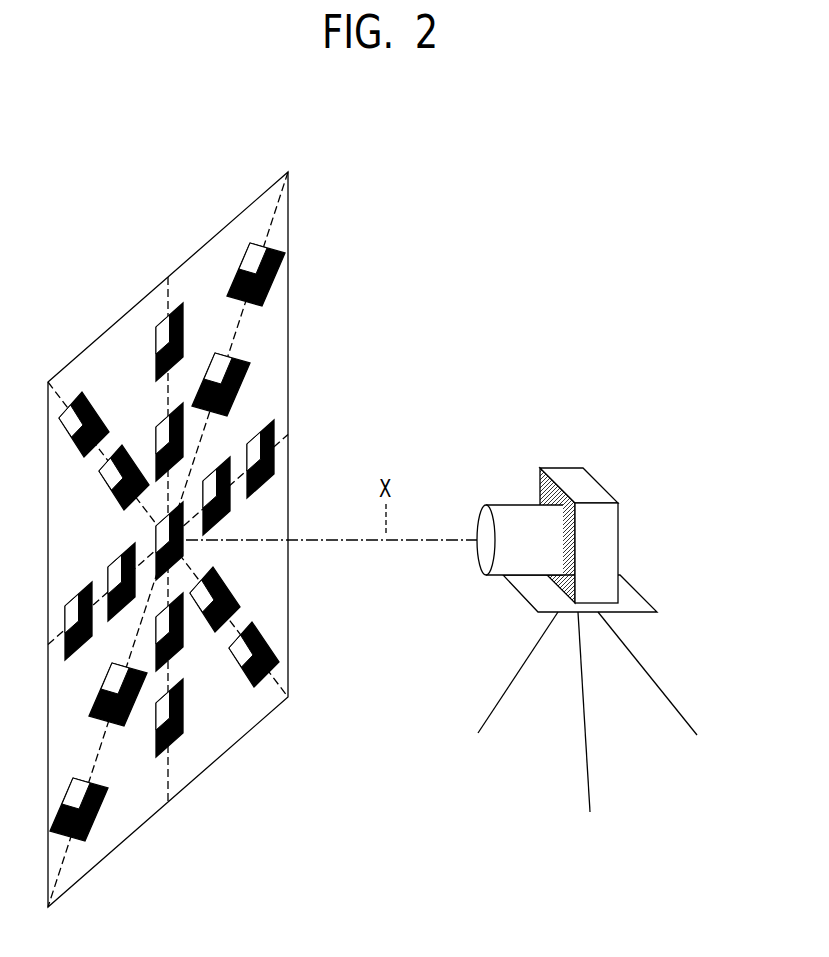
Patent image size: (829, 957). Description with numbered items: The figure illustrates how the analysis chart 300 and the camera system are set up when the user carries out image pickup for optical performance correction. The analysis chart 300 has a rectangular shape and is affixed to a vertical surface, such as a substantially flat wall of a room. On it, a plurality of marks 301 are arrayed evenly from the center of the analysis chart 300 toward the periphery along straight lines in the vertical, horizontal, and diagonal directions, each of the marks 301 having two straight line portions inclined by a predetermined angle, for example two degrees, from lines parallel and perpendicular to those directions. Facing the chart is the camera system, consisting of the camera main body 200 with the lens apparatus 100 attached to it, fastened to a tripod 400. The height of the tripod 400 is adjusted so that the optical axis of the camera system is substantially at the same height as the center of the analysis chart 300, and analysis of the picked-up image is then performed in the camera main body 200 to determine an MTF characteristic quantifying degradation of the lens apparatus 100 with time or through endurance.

The lens apparatus 100 is at (496, 504).
The camera main body 200 is at (637, 479).
The analysis chart 300 is at (318, 279).
The marks 301 is at (275, 420).
The tripod 400 is at (681, 662).